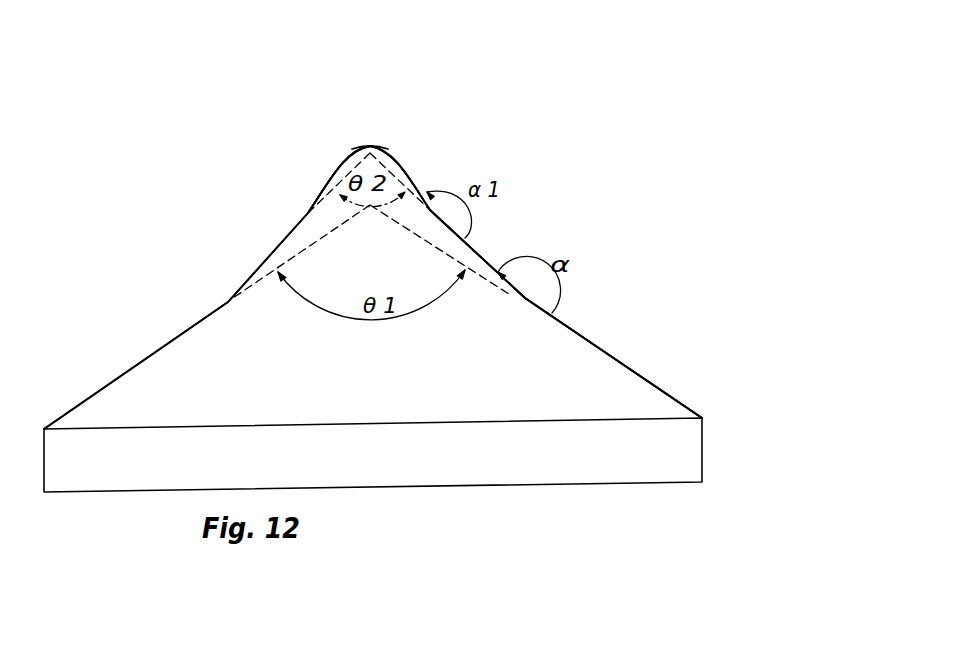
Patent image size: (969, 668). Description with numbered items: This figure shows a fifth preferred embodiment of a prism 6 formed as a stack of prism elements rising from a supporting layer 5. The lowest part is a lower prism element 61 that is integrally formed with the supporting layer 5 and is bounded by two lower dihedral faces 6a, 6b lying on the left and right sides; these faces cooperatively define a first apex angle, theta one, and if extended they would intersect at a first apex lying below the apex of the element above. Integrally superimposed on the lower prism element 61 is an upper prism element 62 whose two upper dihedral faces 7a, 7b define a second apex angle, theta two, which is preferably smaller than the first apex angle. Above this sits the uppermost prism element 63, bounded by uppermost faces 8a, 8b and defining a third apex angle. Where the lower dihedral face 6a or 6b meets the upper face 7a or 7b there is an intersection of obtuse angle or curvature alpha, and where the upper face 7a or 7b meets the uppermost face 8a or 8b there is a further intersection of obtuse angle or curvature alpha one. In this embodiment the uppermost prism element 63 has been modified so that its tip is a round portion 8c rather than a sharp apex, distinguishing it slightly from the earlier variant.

The supporting layer 5 is at (532, 458).
The prism 6 is at (717, 95).
The lower dihedral face 6a is at (146, 357).
The lower dihedral face 6b is at (604, 339).
The upper dihedral face 7a is at (268, 256).
The upper dihedral face 7b is at (464, 241).
The uppermost face 8a is at (330, 179).
The uppermost face 8b is at (407, 169).
The round portion 8c is at (360, 146).
The lower prism element 61 is at (608, 382).
The upper prism element 62 is at (466, 236).
The uppermost prism element 63 is at (392, 149).